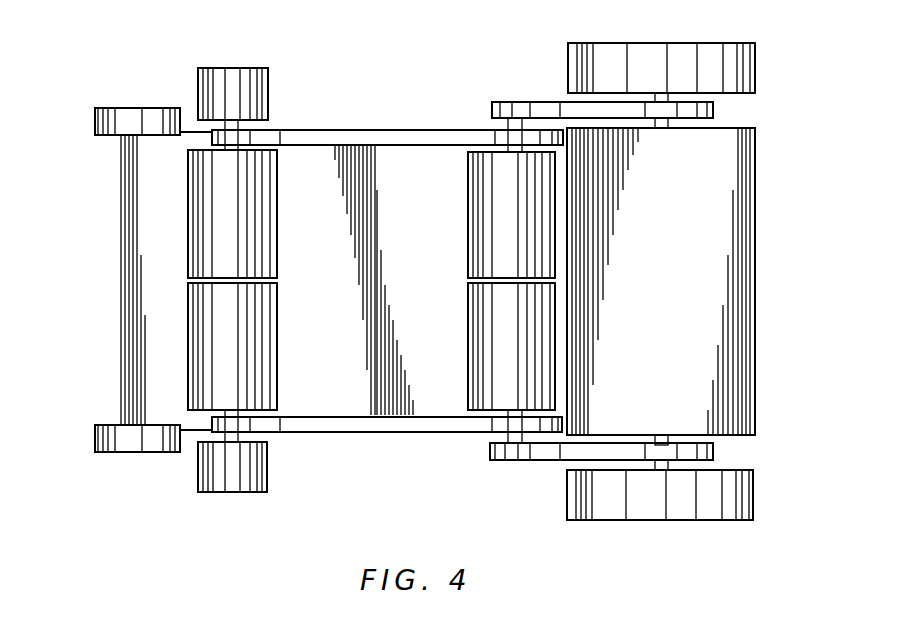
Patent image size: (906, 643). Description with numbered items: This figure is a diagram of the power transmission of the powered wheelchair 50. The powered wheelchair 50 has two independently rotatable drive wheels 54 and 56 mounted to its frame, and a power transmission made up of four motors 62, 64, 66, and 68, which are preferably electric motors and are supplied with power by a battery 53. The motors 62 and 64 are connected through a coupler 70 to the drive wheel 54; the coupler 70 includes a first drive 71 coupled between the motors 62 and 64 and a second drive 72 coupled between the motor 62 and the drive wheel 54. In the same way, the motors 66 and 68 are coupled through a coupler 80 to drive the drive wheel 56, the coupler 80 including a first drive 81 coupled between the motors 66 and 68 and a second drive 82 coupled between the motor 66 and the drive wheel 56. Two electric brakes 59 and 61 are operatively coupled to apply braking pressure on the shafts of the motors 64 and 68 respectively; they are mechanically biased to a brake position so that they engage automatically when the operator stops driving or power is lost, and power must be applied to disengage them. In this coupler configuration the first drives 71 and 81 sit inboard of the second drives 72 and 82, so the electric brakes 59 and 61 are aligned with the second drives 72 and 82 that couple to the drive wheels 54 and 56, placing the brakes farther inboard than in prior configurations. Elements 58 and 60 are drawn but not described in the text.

The powered wheelchair 50 is at (108, 323).
The battery 53 is at (721, 230).
The drive wheel 54 is at (680, 58).
The drive wheel 56 is at (678, 505).
The upper wheel 58 is at (155, 118).
The electric brake 59 is at (223, 76).
The lower wheel 60 is at (148, 448).
The electric brake 61 is at (218, 483).
The motor 62 is at (480, 202).
The motor 64 is at (262, 204).
The motor 66 is at (472, 305).
The motor 68 is at (268, 370).
The coupler 70 is at (438, 68).
The first drive 71 is at (368, 128).
The second drive 72 is at (553, 103).
The coupler 80 is at (435, 490).
The first drive 81 is at (368, 437).
The second drive 82 is at (556, 464).